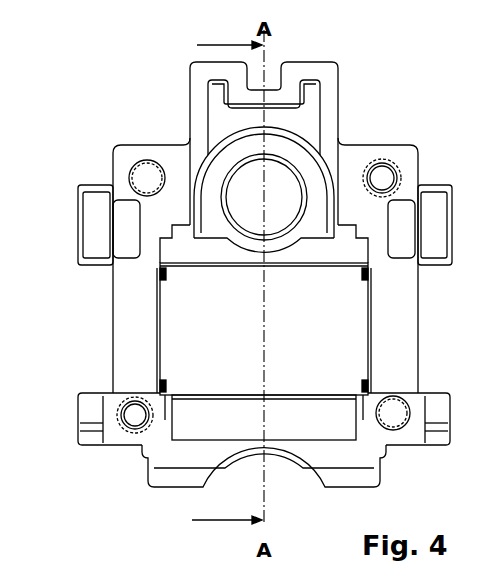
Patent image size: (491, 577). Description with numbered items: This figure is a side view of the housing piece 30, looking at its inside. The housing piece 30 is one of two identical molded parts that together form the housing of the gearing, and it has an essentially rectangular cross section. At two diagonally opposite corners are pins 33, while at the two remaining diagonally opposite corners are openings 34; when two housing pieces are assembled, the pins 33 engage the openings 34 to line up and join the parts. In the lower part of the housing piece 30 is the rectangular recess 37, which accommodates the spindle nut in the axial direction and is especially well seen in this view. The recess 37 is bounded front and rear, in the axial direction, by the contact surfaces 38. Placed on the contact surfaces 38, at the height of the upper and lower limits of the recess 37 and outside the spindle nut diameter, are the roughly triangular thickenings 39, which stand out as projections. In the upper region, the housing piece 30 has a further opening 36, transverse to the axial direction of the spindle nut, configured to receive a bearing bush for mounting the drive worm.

The housing piece 30 is at (382, 112).
The pin 33 is at (380, 177).
The opening 34 is at (145, 172).
The opening 36 is at (266, 190).
The recess 37 is at (242, 305).
The contact surface 38 is at (158, 330).
The thickening 39 is at (160, 275).